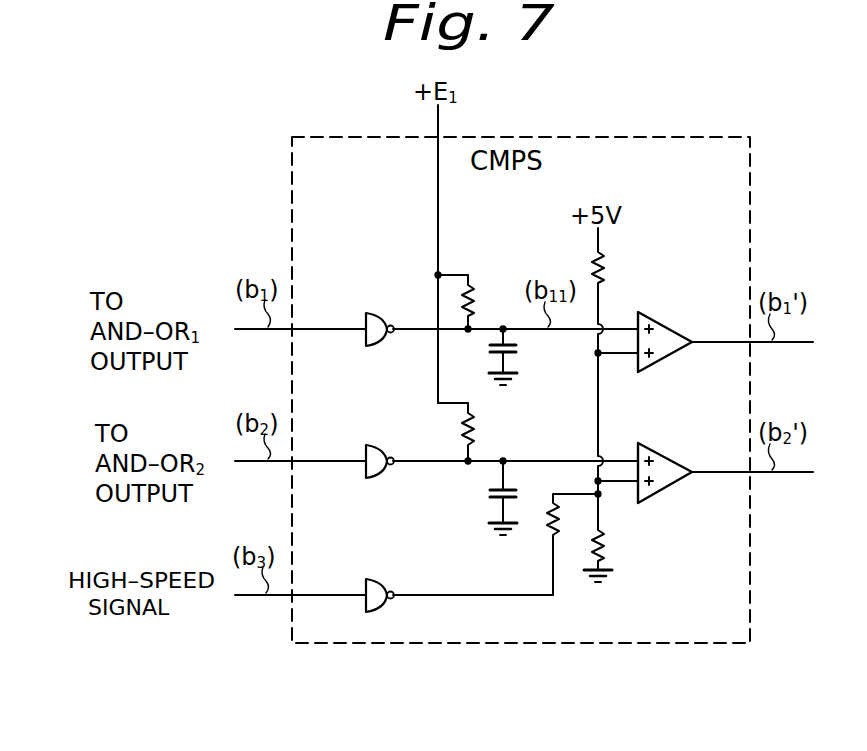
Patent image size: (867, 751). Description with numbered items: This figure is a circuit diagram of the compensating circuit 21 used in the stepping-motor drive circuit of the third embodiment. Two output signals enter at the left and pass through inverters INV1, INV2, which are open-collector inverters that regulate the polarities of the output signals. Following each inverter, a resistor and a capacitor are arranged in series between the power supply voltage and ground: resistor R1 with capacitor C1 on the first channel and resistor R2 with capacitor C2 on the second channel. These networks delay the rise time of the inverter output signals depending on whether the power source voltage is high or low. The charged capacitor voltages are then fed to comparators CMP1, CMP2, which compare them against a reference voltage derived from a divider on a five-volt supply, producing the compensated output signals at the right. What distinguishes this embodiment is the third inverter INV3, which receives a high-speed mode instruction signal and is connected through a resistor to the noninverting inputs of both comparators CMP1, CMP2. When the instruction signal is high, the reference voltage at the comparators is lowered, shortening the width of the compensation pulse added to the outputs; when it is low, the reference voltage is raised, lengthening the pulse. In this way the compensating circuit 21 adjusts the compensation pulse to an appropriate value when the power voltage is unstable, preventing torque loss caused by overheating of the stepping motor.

The compensating circuit 21 is at (720, 136).
The resistor R1 is at (473, 300).
The resistor R2 is at (473, 425).
The capacitor C1 is at (518, 348).
The capacitor C2 is at (532, 480).
The inverter INV1 is at (372, 315).
The inverter INV2 is at (372, 448).
The third inverter INV3 is at (372, 582).
The comparator CMP1 is at (719, 329).
The comparator CMP2 is at (719, 459).